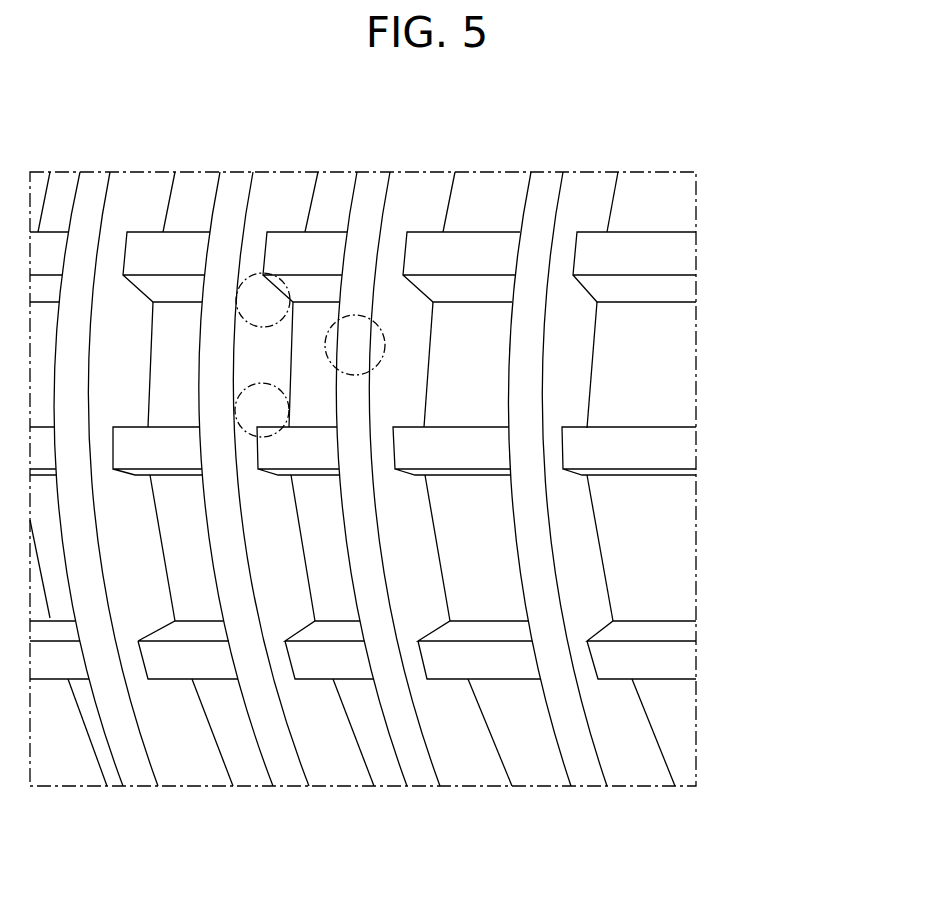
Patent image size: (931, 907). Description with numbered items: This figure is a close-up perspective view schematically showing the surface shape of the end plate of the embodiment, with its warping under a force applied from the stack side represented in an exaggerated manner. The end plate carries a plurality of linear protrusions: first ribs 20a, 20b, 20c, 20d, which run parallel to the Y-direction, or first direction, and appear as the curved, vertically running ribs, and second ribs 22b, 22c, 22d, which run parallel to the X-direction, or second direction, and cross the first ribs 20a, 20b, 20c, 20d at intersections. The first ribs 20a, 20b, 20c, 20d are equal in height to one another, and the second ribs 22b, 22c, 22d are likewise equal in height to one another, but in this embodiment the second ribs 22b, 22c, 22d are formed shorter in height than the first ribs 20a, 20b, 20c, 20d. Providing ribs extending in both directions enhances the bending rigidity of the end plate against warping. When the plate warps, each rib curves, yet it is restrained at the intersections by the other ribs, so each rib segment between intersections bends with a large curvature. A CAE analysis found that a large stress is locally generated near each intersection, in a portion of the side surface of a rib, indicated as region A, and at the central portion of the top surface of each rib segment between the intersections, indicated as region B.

The first rib 20a is at (138, 768).
The first rib 20b is at (283, 768).
The first rib 20c is at (422, 768).
The first rib 20d is at (585, 768).
The second rib 22b is at (673, 259).
The second rib 22c is at (672, 451).
The second rib 22d is at (673, 666).
The region A is at (284, 386).
The region B is at (362, 316).